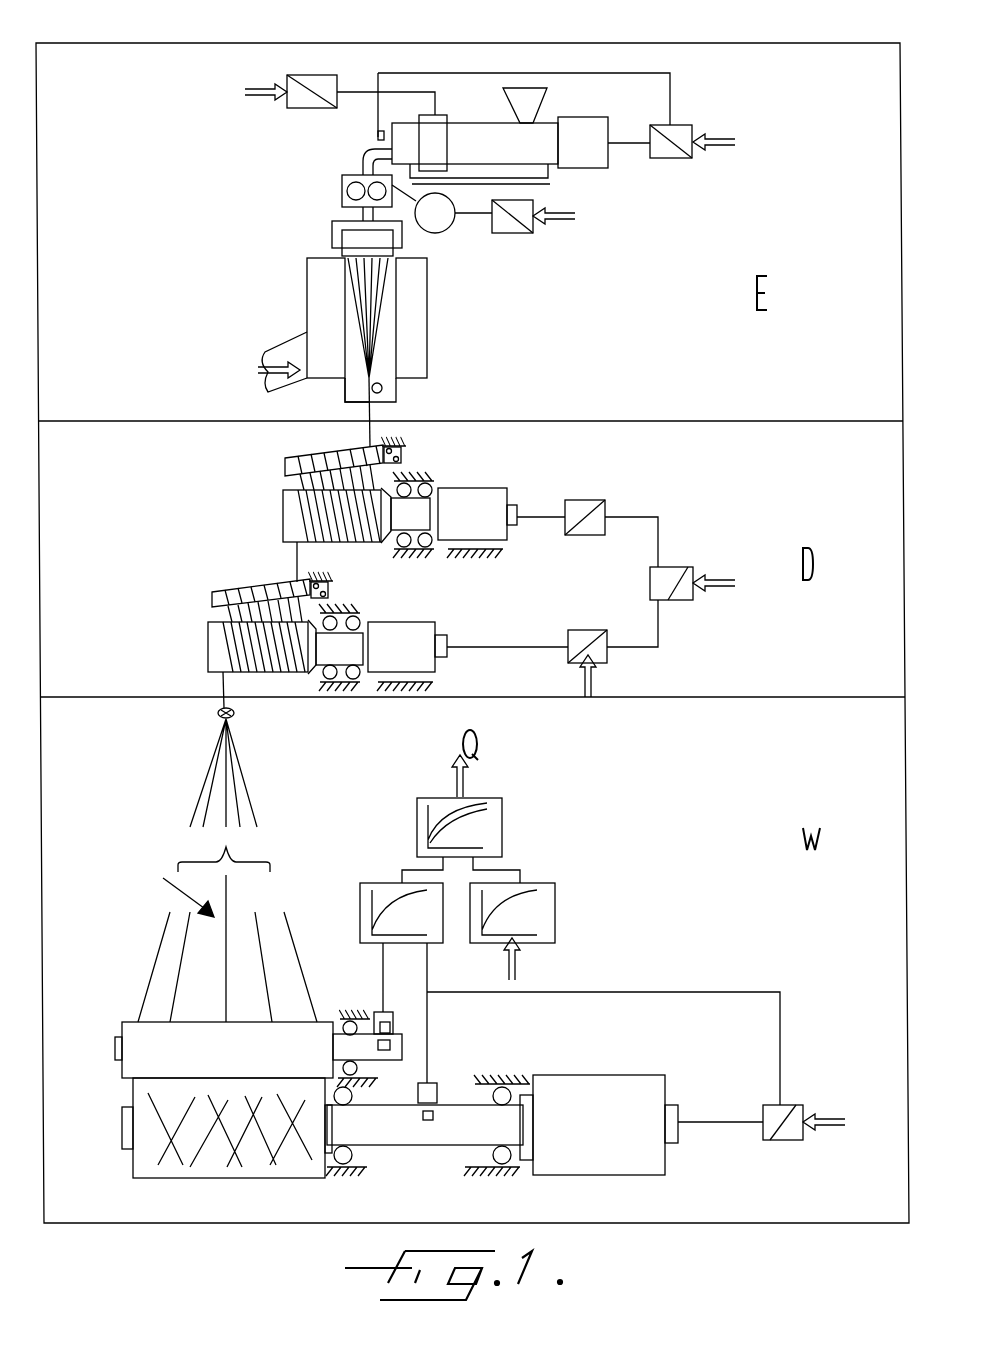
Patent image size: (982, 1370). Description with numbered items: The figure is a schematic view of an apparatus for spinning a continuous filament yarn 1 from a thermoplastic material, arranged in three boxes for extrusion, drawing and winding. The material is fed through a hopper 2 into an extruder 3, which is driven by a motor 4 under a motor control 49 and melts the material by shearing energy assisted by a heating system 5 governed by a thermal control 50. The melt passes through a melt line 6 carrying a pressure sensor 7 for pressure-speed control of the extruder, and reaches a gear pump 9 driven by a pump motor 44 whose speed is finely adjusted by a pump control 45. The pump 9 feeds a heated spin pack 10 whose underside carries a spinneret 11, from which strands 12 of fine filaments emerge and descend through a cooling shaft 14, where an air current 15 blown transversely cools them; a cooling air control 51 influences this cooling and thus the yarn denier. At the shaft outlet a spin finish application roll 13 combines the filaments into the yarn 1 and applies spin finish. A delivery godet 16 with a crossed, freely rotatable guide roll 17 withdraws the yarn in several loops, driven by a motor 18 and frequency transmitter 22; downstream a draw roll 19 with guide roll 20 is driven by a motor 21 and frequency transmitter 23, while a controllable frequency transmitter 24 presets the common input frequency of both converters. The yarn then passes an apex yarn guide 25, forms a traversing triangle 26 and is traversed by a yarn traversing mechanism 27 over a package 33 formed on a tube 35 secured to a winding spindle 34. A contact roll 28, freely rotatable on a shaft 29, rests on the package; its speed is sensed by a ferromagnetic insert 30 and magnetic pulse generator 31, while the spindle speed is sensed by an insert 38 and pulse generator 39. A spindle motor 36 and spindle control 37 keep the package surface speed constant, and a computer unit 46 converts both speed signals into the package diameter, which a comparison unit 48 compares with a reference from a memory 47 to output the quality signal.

The continuous filament yarn 1 is at (372, 404).
The hopper 2 is at (540, 103).
The extruder 3 is at (547, 172).
The motor 4 is at (592, 170).
The heating system 5 is at (445, 115).
The melt line 6 is at (364, 154).
The pressure sensor 7 is at (377, 134).
The gear pump 9 is at (342, 189).
The spin pack 10 is at (332, 233).
The spinneret 11 is at (342, 249).
The strands of filaments 12 is at (352, 286).
The spin finish application roll 13 is at (383, 386).
The cooling shaft 14 is at (345, 401).
The air current 15 is at (416, 313).
The delivery roll or godet 16 is at (283, 509).
The guide roll 17 is at (290, 457).
The motor 18 is at (495, 489).
The draw roll or godet 19 is at (222, 652).
The guide roll 20 is at (216, 598).
The motor 21 is at (404, 622).
The frequency transmitter 22 is at (602, 509).
The frequency transmitter 23 is at (622, 608).
The controllable frequency transmitter 24 is at (693, 574).
The apex yarn guide 25 is at (221, 715).
The traversing triangle 26 is at (223, 842).
The yarn traversing mechanism 27 is at (166, 890).
The contact roll 28 is at (140, 1042).
The shaft 29 is at (358, 1048).
The ferromagnetic insert 30 is at (390, 1046).
The magnetic pulse generator 31 is at (393, 1021).
The package 33 is at (233, 1170).
The winding spindle 34 is at (413, 1133).
The tube 35 is at (122, 1142).
The spindle motor 36 is at (576, 1170).
The spindle control 37 is at (790, 1105).
The ferromagnetic insert 38 is at (435, 1120).
The pulse generator 39 is at (437, 1094).
The pump motor 44 is at (444, 233).
The pump control 45 is at (513, 234).
The computer unit 46 is at (382, 894).
The memory 47 is at (533, 884).
The comparison unit 48 is at (495, 812).
The motor control 49 is at (672, 160).
The thermal control 50 is at (306, 75).
The cooling air control 51 is at (262, 370).